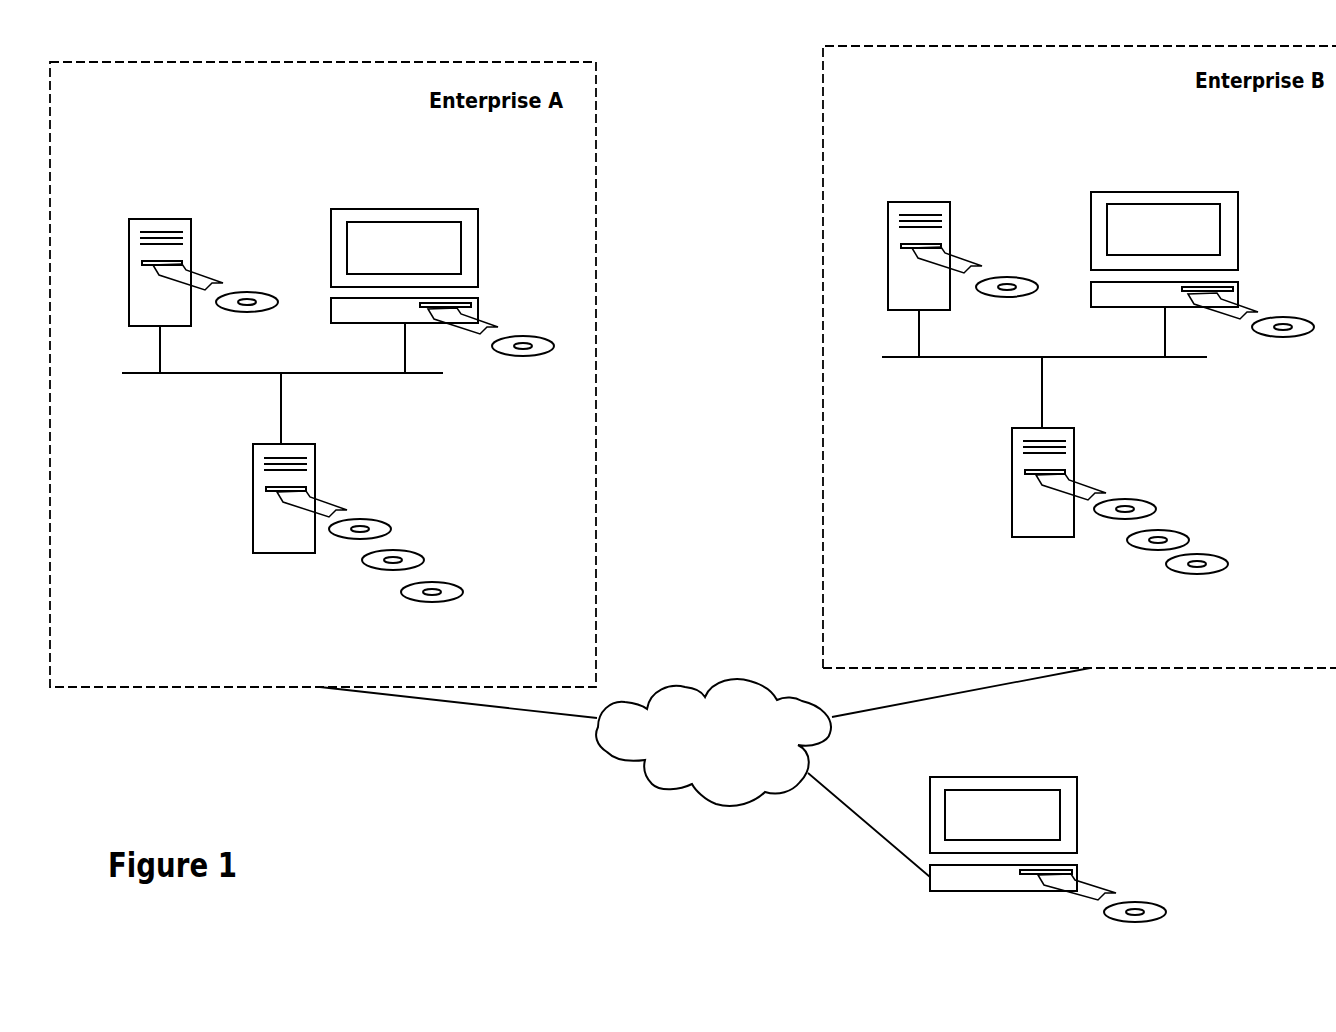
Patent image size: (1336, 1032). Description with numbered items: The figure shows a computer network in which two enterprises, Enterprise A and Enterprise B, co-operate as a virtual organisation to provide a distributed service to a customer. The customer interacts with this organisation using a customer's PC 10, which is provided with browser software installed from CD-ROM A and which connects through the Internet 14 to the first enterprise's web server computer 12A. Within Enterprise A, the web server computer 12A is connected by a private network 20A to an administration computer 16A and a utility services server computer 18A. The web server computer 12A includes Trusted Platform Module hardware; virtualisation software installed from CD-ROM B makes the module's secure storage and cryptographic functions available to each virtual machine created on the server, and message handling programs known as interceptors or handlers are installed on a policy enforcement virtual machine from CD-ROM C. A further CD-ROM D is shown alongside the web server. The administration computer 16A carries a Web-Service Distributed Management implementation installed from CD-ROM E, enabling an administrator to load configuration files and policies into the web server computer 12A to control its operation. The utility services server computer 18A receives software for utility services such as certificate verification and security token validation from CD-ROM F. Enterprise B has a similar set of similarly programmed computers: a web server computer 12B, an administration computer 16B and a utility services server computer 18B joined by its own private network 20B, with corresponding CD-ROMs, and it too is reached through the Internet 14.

The customer's PC 10 is at (1008, 777).
The web server computer 12A is at (290, 444).
The web server computer 12B is at (1050, 428).
The Internet 14 is at (720, 686).
The administration computer 16A is at (445, 209).
The administration computer 16B is at (1205, 192).
The utility services server computer 18A is at (160, 219).
The utility services server computer 18B is at (919, 202).
The private network 20A is at (135, 372).
The private network 20B is at (897, 357).
The CD-ROM A is at (1135, 902).
The CD-ROM B is at (360, 519).
The CD-ROM C is at (393, 550).
The data disc D is at (432, 582).
The CD-ROM E is at (523, 336).
The CD-ROM F is at (247, 292).